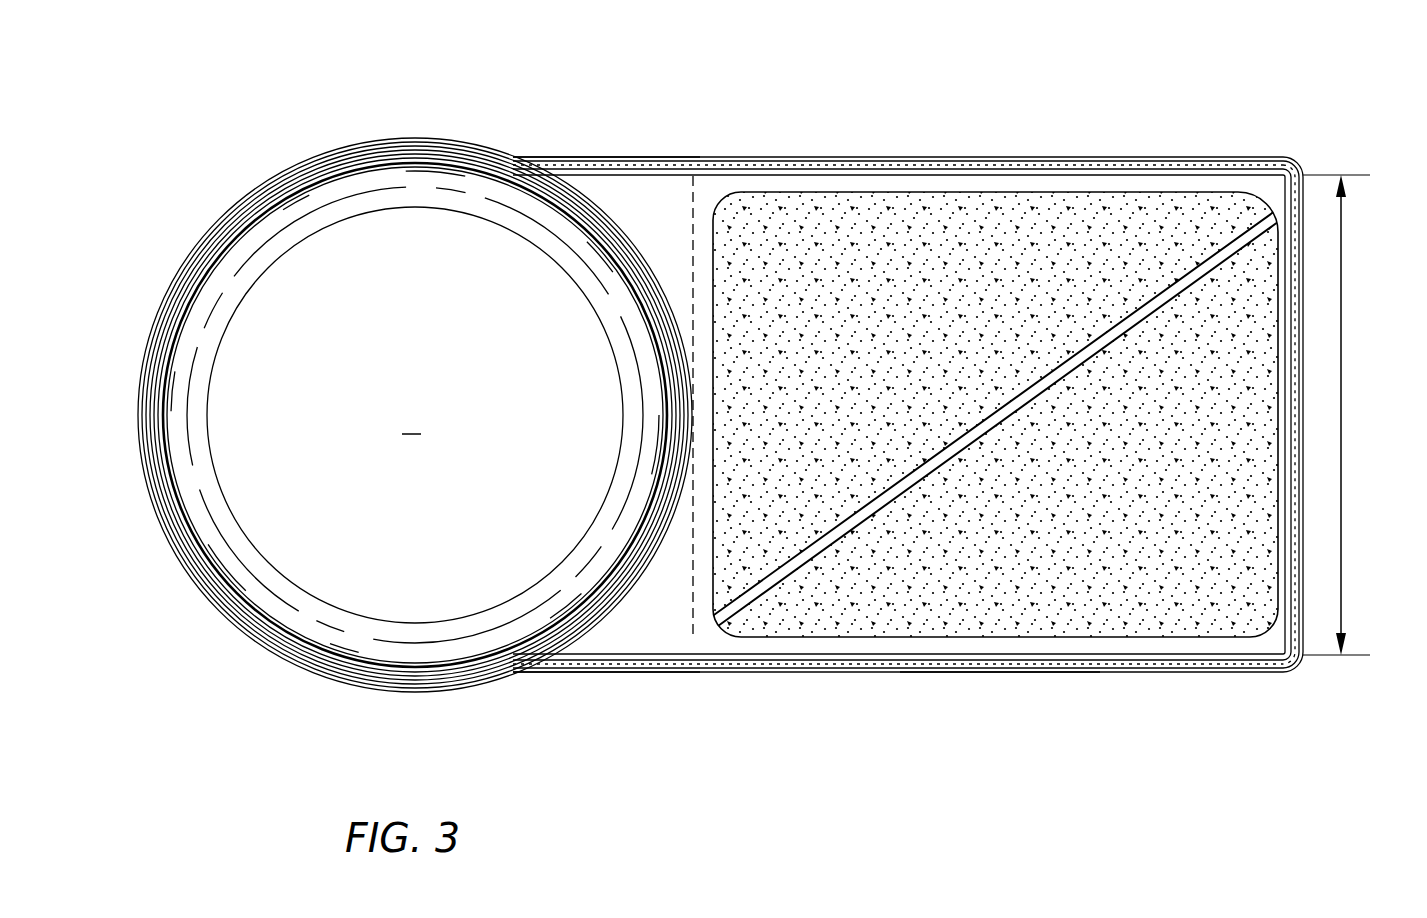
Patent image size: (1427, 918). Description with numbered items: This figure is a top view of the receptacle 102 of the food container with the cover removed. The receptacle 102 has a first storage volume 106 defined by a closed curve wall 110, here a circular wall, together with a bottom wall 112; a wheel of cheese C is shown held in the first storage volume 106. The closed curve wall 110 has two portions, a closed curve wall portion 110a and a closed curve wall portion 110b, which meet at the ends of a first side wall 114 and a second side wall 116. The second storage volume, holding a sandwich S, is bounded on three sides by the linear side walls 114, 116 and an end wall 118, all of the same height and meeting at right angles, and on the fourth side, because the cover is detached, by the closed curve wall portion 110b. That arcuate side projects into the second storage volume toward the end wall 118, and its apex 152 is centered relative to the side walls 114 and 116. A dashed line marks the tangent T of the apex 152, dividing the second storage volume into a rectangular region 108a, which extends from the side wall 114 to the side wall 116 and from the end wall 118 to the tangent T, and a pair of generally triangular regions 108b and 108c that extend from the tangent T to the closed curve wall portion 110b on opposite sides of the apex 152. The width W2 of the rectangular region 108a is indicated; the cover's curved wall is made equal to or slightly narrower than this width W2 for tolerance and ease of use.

The receptacle 102 is at (1312, 124).
The first storage volume 106 is at (293, 192).
The rectangular region 108a is at (992, 647).
The generally triangular region 108b is at (664, 619).
The generally triangular region 108c is at (666, 214).
The closed curve wall 110 is at (314, 684).
The closed curve wall portion 110a is at (190, 578).
The closed curve wall portion 110b is at (598, 623).
The bottom wall 112 is at (1082, 650).
The first side wall 114 is at (1142, 157).
The second side wall 116 is at (820, 673).
The end wall 118 is at (1288, 625).
The apex 152 is at (690, 415).
The wheel of cheese C is at (411, 421).
The sandwich S is at (912, 618).
The tangent T is at (693, 637).
The width W2 is at (1341, 398).